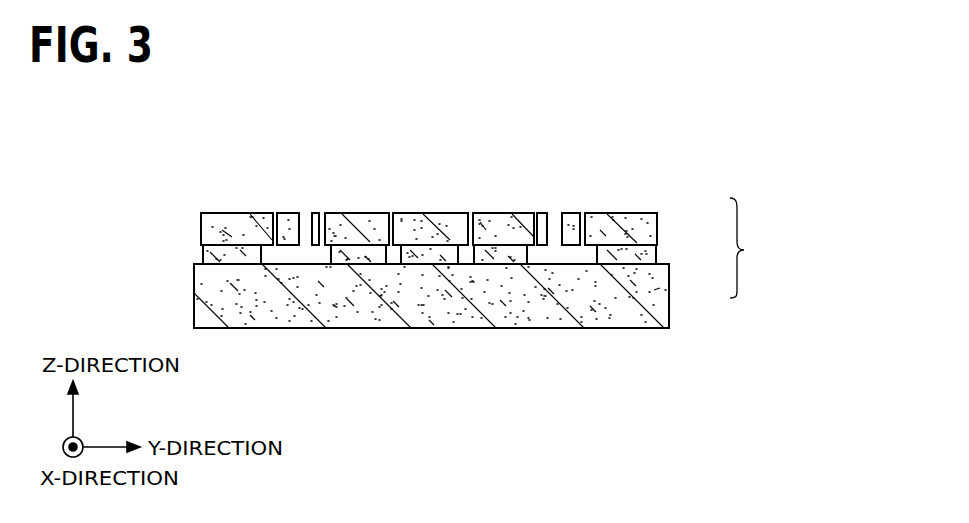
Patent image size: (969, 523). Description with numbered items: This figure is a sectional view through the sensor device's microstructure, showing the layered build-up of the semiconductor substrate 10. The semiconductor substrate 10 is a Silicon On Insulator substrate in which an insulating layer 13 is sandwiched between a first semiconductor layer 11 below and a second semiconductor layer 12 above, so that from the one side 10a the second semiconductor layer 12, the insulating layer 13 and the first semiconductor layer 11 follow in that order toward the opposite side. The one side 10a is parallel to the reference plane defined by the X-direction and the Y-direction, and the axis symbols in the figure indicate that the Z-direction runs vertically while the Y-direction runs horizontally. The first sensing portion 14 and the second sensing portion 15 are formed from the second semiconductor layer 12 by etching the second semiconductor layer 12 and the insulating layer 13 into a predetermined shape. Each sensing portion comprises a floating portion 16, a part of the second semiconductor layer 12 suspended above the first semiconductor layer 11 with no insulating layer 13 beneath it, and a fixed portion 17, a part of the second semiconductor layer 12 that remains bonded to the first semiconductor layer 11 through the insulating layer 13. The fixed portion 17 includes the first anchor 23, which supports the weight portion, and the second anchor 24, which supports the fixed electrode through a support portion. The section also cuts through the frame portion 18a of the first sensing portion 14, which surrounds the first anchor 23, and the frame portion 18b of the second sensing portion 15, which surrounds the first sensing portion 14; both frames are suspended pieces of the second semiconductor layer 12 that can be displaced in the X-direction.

The semiconductor substrate 10 is at (751, 248).
The one side of the semiconductor substrate 10a is at (201, 213).
The first semiconductor layer 11 is at (648, 290).
The second semiconductor layer 12 is at (657, 223).
The insulating layer 13 is at (647, 255).
The first sensing portion 14 is at (496, 209).
The second sensing portion 15 is at (649, 209).
The floating portion 16 is at (566, 220).
The fixed portion 17 is at (603, 220).
The frame portion 18a is at (318, 213).
The frame portion 18b is at (287, 213).
The first anchor 23 is at (242, 213).
The second anchor 24 is at (370, 213).